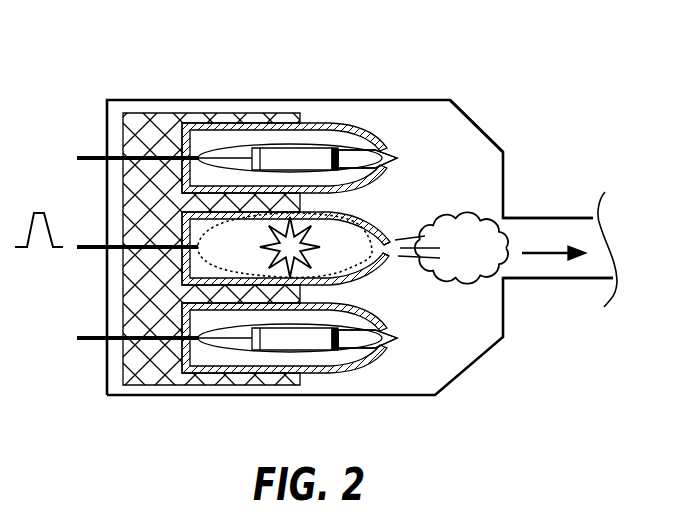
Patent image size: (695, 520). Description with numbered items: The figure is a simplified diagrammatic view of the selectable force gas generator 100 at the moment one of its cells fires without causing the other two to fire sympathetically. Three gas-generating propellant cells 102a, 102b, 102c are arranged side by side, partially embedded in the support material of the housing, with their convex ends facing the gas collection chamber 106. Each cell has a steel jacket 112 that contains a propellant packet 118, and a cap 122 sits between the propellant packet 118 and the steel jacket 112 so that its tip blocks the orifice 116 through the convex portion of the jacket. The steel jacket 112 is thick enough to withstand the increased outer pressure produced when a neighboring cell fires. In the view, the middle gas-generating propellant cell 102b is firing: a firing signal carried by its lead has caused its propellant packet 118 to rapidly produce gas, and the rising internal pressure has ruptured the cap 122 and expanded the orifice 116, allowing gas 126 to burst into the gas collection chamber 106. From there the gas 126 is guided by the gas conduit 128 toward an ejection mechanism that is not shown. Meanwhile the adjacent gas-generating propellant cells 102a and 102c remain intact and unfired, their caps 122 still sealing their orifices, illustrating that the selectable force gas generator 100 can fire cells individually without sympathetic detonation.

The selectable force gas generator 100 is at (437, 100).
The gas-generating propellant cell 102a is at (289, 108).
The gas-generating propellant cell 102b is at (382, 179).
The gas-generating propellant cell 102c is at (330, 375).
The gas collection chamber 106 is at (462, 112).
The steel jacket 112 is at (318, 124).
The orifice 116 is at (385, 236).
The propellant packet 118 is at (236, 157).
The cap 122 is at (363, 157).
The gas 126 is at (477, 258).
The gas conduit 128 is at (567, 279).